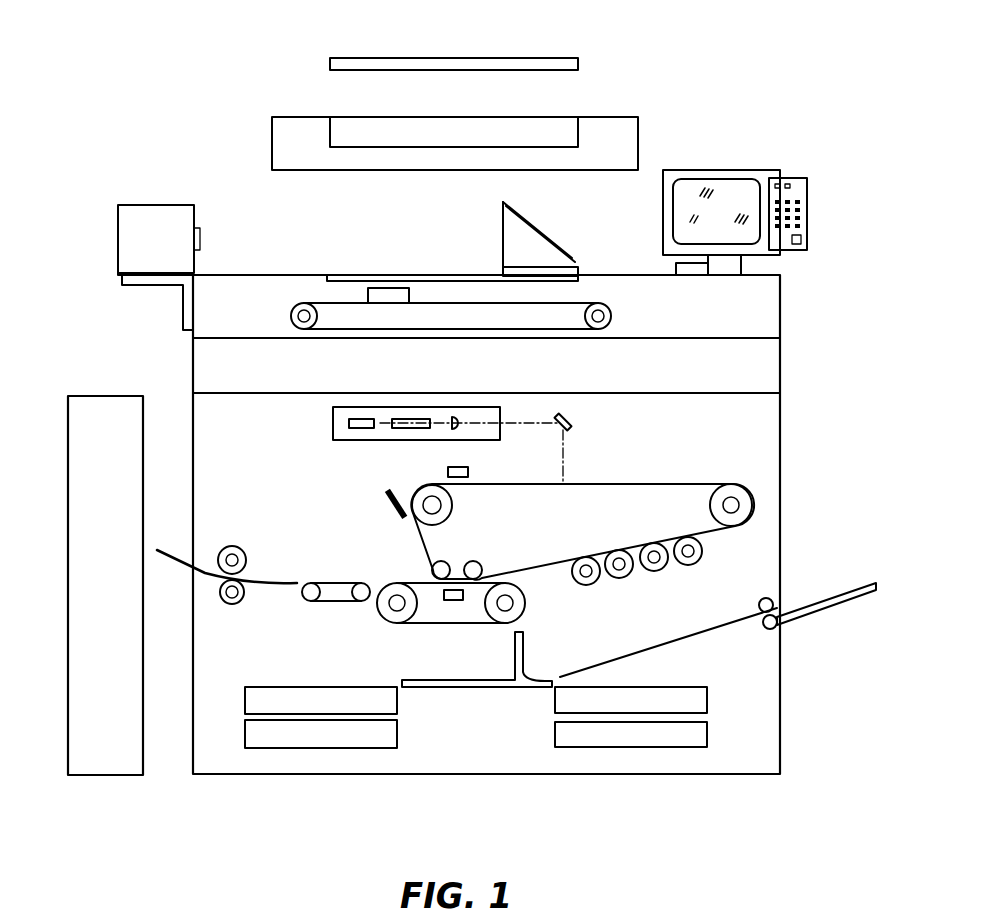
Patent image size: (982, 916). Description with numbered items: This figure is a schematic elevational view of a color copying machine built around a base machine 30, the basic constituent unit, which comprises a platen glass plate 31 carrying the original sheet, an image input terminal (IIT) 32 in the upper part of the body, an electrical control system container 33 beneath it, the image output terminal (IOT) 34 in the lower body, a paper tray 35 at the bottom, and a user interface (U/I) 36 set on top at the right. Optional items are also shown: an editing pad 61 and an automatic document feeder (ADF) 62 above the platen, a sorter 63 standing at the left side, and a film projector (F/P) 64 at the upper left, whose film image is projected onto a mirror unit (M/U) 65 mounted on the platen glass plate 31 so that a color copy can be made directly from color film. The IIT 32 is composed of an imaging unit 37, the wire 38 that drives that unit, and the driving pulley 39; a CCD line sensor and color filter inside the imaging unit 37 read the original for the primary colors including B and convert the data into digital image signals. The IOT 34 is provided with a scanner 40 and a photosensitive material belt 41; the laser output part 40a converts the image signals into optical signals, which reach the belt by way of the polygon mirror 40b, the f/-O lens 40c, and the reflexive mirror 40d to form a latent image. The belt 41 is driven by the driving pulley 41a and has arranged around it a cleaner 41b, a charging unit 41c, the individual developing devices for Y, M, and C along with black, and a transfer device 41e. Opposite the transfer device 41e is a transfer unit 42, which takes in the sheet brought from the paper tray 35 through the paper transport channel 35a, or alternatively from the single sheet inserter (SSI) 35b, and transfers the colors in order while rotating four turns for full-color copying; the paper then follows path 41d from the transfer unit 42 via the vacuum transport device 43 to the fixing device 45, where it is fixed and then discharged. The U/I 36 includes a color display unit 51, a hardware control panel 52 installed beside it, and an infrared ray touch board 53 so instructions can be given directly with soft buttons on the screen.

The base machine 30 is at (338, 780).
The platen glass plate 31 is at (437, 275).
The image input terminal (IIT) 32 is at (755, 305).
The electrical control system container 33 is at (755, 375).
The image output terminal (IOT) 34 is at (705, 470).
The paper tray 35 is at (530, 718).
The paper transport channel 35a is at (543, 664).
The single sheet inserter (SSI) 35b is at (835, 606).
The user interface (U/I) 36 is at (728, 158).
The imaging unit 37 is at (387, 295).
The wire 38 is at (312, 305).
The driving pulley 39 is at (598, 300).
The scanner 40 is at (333, 427).
The laser output part 40a is at (362, 429).
The polygon mirror 40b is at (410, 429).
The f/-O lens 40c is at (455, 418).
The reflexive mirror 40d is at (568, 412).
The photosensitive material belt 41 is at (618, 484).
The driving pulley 41a is at (452, 516).
The cleaner 41b is at (392, 508).
The charging unit 41c is at (468, 471).
The paper path 41d is at (664, 620).
The transfer device 41e is at (455, 601).
The transfer unit 42 is at (425, 625).
The vacuum transport device 43 is at (332, 603).
The fixing device 45 is at (245, 553).
The color display unit 51 is at (740, 200).
The hardware control panel 52 is at (808, 215).
The infrared ray touch board 53 is at (687, 170).
The editing pad 61 is at (535, 58).
The automatic document feeder (ADF) 62 is at (600, 117).
The sorter 63 is at (68, 585).
The film projector (F/P) 64 is at (160, 205).
The mirror unit (M/U) 65 is at (540, 222).
The primary color blue B is at (586, 585).
The magenta developing device M is at (619, 578).
The cyan developing device C is at (654, 571).
The yellow developing device Y is at (688, 565).